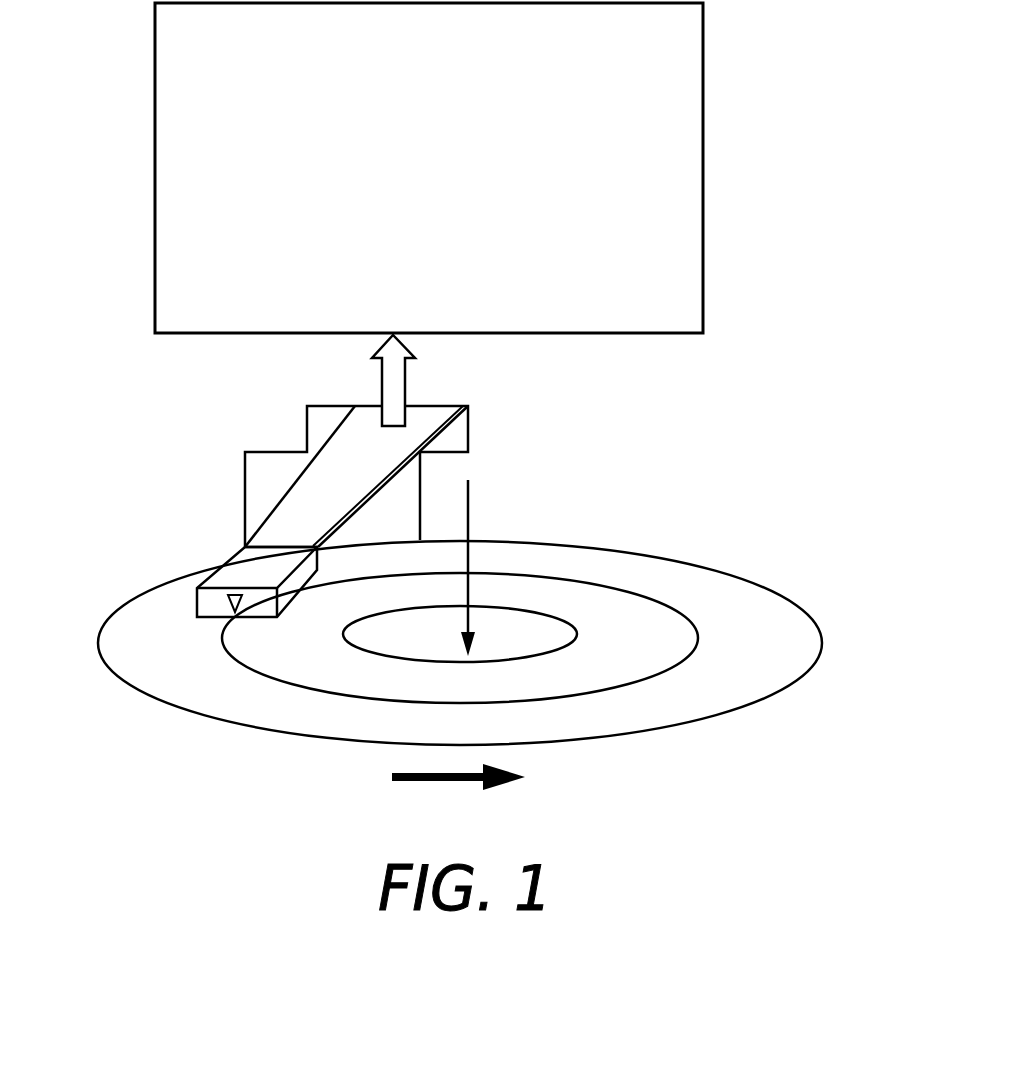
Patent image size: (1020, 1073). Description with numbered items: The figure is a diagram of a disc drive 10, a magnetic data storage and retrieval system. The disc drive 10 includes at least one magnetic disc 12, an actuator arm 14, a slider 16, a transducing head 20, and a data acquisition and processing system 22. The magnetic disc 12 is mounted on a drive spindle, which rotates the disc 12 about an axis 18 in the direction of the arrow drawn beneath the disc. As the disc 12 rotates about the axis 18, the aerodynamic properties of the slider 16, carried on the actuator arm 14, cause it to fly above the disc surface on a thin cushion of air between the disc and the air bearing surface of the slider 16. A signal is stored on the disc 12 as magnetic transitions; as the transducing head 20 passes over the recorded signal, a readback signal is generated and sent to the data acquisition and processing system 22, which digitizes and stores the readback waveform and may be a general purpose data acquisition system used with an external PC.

The disc drive 10 is at (705, 788).
The magnetic disc 12 is at (757, 587).
The actuator arm 14 is at (280, 492).
The slider 16 is at (223, 568).
The axis 18 is at (470, 507).
The transducing head 20 is at (223, 606).
The data acquisition and processing system 22 is at (704, 165).